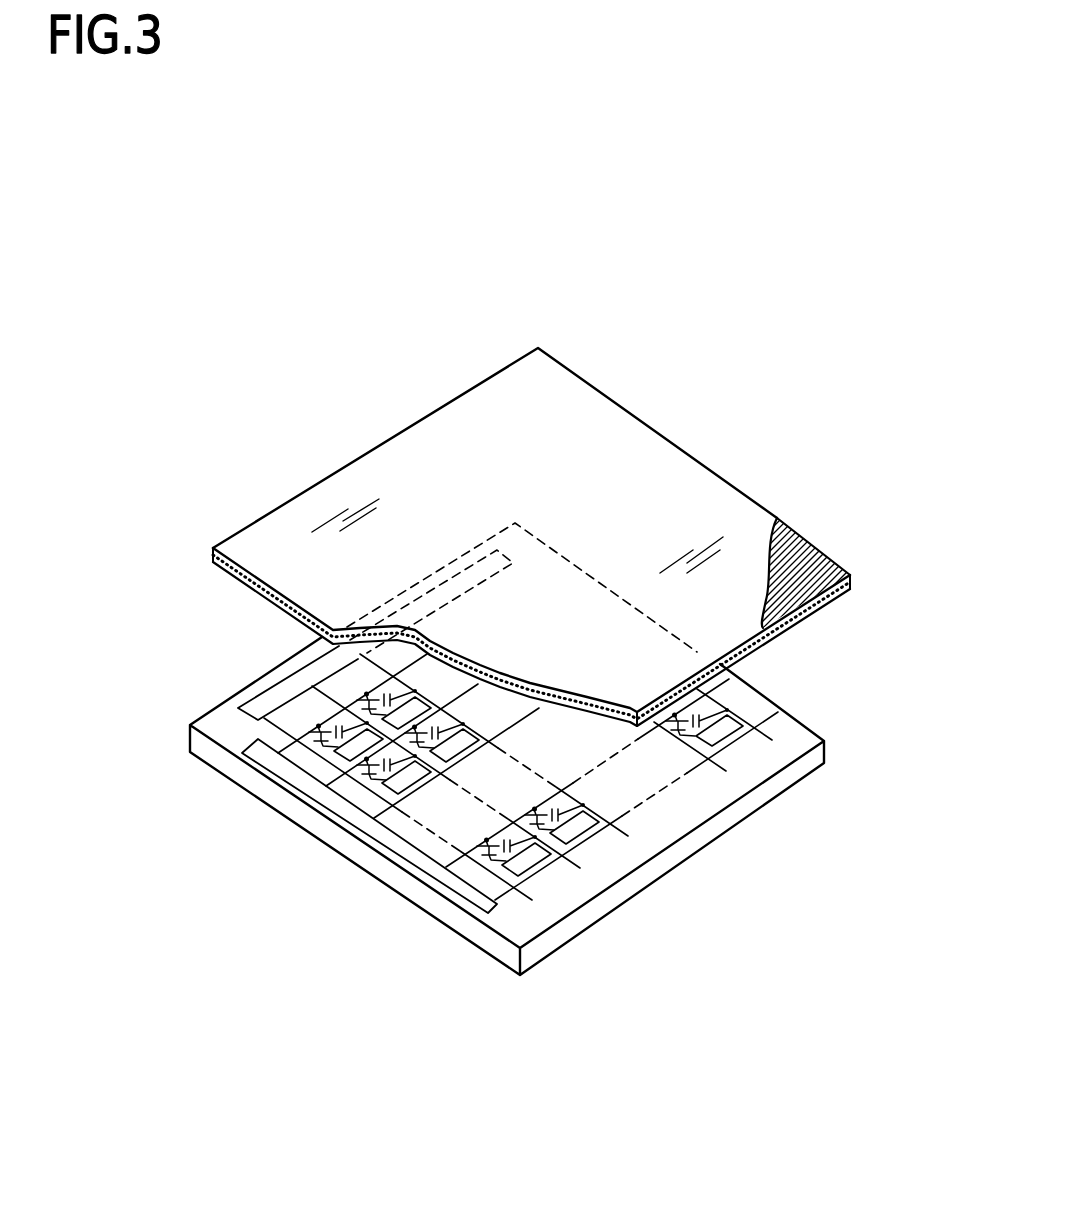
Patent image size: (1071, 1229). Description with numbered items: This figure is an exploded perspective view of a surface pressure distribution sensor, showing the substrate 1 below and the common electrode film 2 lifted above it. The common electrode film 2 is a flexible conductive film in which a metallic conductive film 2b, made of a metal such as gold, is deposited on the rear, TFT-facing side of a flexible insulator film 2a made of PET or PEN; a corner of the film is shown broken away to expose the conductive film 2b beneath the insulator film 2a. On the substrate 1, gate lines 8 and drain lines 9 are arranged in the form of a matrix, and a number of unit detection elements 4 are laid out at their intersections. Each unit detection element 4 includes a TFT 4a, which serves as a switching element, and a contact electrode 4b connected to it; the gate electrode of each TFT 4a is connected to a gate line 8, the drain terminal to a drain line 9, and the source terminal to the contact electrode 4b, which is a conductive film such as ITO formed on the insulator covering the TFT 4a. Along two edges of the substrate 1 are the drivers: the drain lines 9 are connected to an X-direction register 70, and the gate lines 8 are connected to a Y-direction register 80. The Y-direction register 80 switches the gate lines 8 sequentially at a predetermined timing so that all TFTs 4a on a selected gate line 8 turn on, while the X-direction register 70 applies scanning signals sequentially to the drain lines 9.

The substrate 1 is at (827, 753).
The common electrode film 2 is at (564, 537).
The flexible insulator film 2a is at (710, 473).
The metallic conductive film 2b is at (788, 569).
The unit detection element 4 is at (526, 903).
The TFT 4a is at (510, 880).
The contact electrode 4b is at (548, 878).
The gate line 8 is at (478, 884).
The drain line 9 is at (622, 828).
The X-direction register 70 is at (248, 707).
The Y-direction register 80 is at (277, 752).